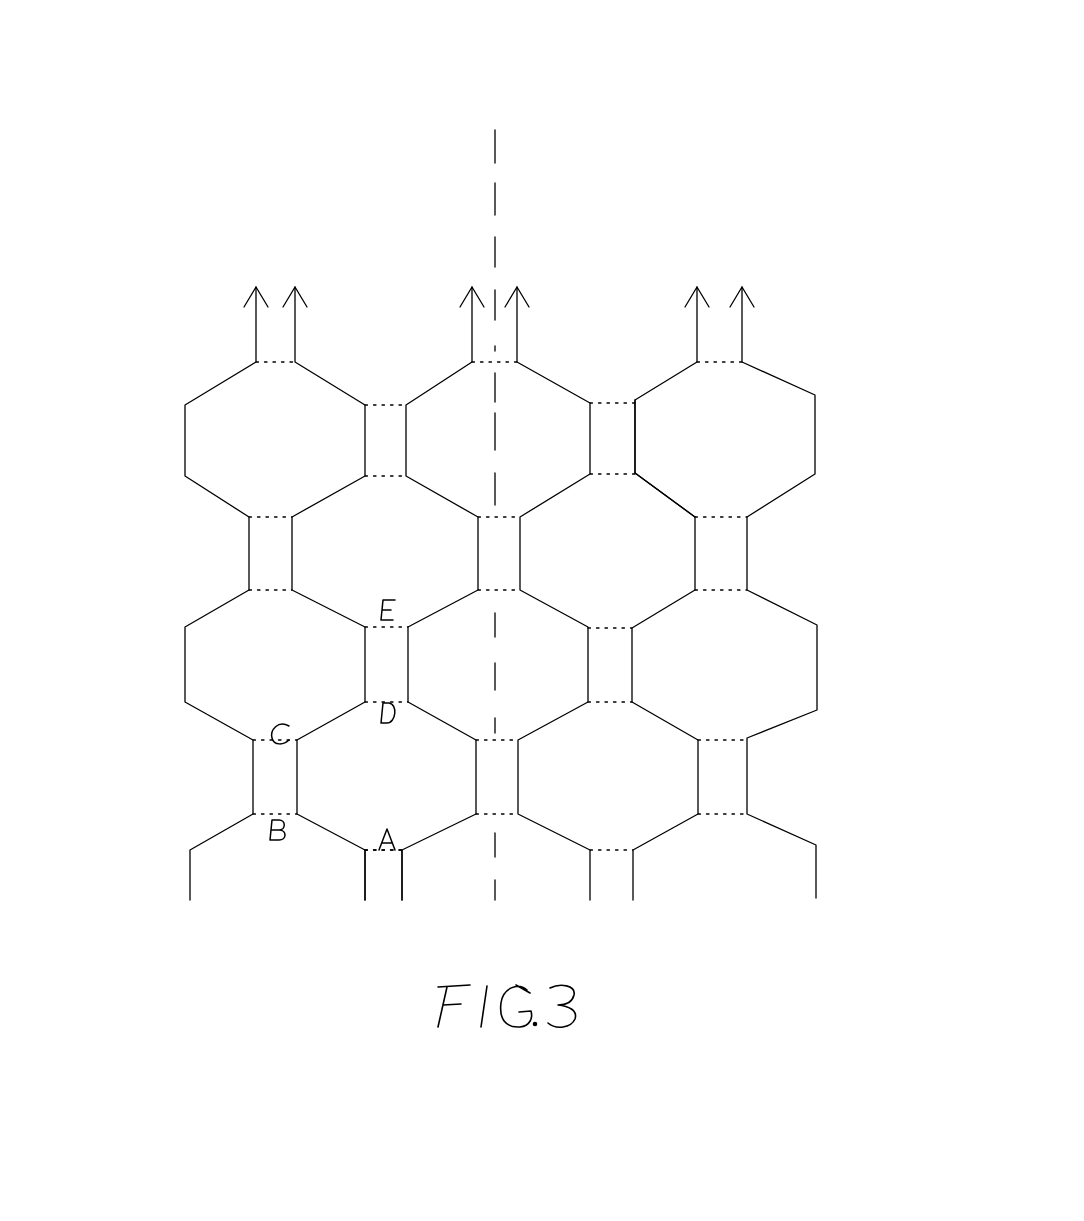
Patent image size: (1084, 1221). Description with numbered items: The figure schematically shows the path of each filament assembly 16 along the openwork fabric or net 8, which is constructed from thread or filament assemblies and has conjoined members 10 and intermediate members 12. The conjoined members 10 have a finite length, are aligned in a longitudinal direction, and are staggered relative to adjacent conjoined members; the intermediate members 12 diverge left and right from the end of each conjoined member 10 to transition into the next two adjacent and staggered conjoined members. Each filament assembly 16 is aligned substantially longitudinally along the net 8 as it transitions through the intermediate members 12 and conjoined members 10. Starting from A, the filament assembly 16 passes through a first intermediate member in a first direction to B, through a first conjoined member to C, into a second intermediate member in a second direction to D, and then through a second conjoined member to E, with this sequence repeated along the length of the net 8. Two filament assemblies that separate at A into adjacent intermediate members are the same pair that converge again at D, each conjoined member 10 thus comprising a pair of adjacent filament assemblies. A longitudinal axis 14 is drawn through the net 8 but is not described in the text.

The openwork fabric or net 8 is at (786, 112).
The conjoined member 10 is at (869, 321).
The intermediate member 12 is at (906, 435).
The longitudinal axis 14 is at (770, 32).
The filament assembly 16 is at (104, 1090).